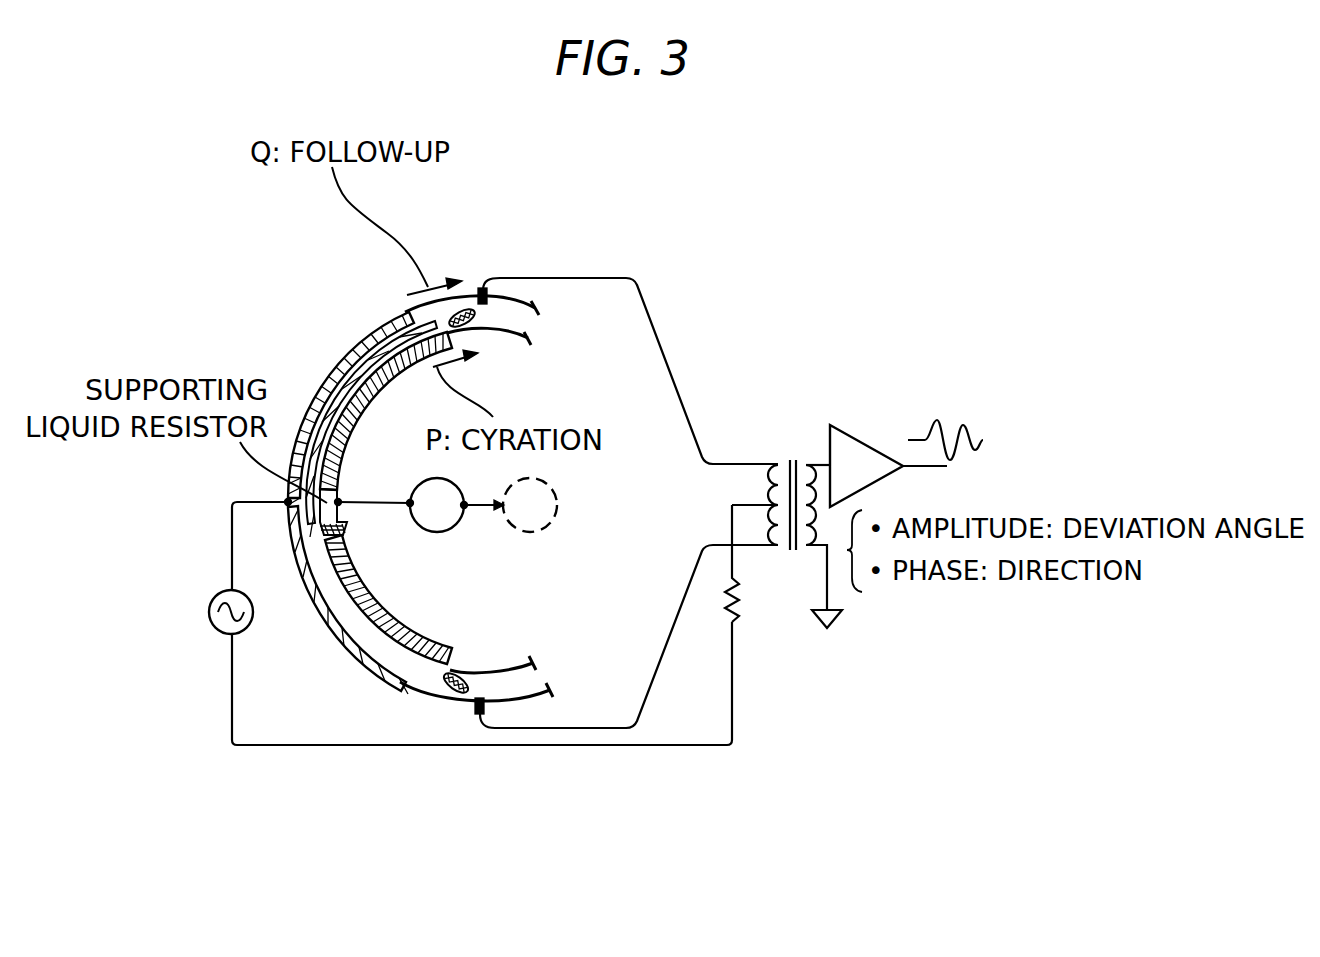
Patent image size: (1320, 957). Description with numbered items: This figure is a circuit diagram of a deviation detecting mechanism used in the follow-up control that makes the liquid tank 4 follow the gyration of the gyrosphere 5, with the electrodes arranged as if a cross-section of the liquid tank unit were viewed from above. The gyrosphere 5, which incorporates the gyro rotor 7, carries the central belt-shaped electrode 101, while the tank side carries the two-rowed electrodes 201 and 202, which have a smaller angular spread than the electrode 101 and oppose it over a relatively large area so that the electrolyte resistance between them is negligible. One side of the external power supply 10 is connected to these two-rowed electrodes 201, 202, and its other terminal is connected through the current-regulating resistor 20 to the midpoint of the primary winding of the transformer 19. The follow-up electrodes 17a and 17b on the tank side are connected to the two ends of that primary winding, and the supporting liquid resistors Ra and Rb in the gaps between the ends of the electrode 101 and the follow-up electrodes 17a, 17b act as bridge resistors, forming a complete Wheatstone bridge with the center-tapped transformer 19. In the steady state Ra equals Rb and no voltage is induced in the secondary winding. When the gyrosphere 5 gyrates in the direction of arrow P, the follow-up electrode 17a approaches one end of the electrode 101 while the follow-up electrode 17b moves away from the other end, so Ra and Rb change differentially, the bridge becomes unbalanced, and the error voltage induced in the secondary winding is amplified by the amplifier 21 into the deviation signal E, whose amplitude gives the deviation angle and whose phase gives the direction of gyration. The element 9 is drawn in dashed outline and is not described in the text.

The two-rowed electrode on the liquid tank side 201 is at (340, 365).
The two-rowed electrode on the liquid tank side 202 is at (352, 417).
The central belt-shaped electrode 101 is at (358, 578).
The liquid tank 4 is at (420, 692).
The gyrosphere 5 is at (500, 337).
The gyro rotor 7 is at (418, 485).
The follow-up element (dashed) 9 is at (560, 505).
The external power supply 10 is at (208, 612).
The follow-up electrode 17a is at (488, 292).
The follow-up electrode 17b is at (487, 705).
The transformer 19 is at (790, 460).
The resistor 20 is at (740, 600).
The amplifier 21 is at (862, 445).
The supporting liquid resistor Ra is at (467, 290).
The supporting liquid resistor Rb is at (452, 703).
The deviation signal E is at (938, 437).